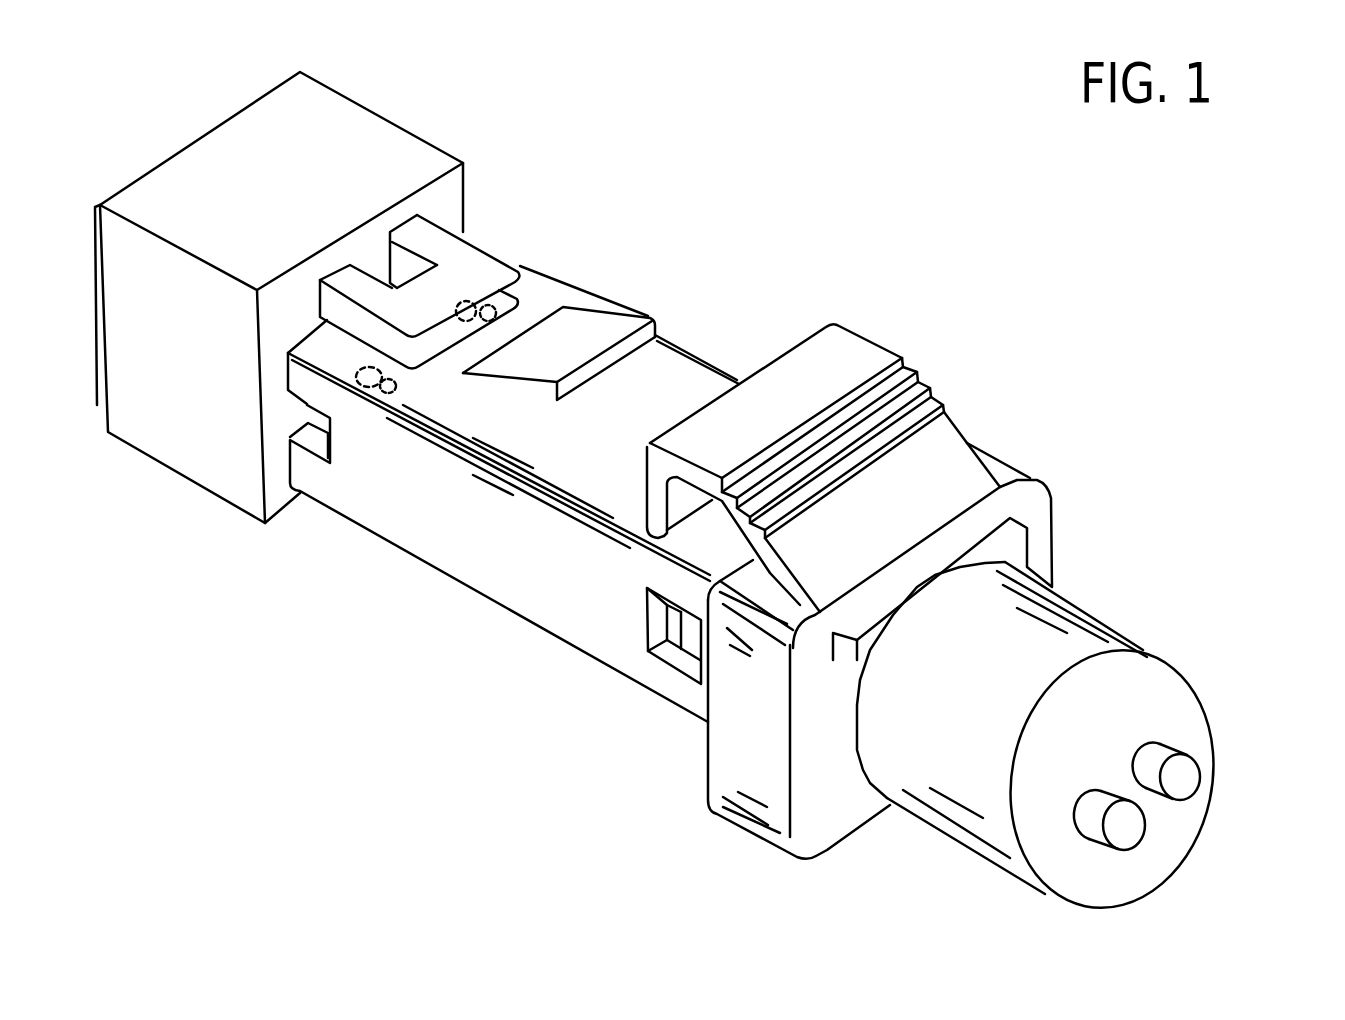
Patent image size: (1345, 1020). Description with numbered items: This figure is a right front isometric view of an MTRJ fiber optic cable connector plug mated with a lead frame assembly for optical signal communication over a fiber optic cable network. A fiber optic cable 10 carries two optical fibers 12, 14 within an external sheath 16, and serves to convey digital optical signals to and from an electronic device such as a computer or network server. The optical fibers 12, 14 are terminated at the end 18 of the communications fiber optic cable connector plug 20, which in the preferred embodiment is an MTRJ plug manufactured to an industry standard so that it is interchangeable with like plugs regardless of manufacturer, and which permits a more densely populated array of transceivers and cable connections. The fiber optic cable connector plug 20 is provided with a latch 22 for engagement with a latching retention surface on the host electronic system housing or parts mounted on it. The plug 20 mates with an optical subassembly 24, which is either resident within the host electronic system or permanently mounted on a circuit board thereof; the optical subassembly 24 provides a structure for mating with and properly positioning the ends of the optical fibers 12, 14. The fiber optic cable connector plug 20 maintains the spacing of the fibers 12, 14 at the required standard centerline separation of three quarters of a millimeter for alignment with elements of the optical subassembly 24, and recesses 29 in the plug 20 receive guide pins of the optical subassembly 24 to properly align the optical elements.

The fiber optic cable 10 is at (1150, 682).
The optical fiber 12 is at (1130, 830).
The optical fiber 14 is at (1185, 782).
The external sheath 16 is at (1075, 627).
The end of the fiber optic cable plug 18 is at (288, 380).
The fiber optic cable connector plug 20 is at (707, 252).
The latch 22 is at (617, 347).
The optical subassembly 24 is at (365, 140).
The recesses 29 is at (490, 300).